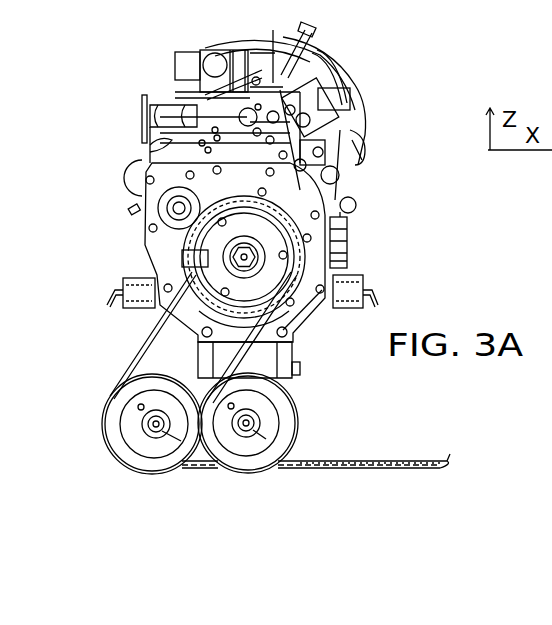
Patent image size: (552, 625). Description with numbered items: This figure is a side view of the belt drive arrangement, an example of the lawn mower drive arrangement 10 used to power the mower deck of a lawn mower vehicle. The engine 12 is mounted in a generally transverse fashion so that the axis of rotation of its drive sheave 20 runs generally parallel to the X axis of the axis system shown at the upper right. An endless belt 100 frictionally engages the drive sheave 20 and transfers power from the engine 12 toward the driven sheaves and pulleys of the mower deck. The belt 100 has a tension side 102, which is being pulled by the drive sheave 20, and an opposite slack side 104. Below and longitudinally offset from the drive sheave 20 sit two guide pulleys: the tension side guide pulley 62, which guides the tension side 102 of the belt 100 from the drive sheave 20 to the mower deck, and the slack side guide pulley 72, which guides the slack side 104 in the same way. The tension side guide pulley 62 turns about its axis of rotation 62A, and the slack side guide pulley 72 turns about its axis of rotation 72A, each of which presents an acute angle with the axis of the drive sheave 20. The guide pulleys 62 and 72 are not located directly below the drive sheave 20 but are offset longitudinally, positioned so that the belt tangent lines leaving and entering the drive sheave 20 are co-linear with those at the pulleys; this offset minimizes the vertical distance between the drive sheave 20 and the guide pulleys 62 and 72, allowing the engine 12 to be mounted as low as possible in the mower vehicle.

The lawn mower drive arrangement 10 is at (352, 338).
The engine 12 is at (371, 128).
The drive sheave 20 is at (280, 278).
The tension side guide pulley 62 is at (292, 398).
The axis of rotation of tension side guide pulley 62A is at (252, 426).
The slack side guide pulley 72 is at (128, 397).
The axis of rotation of slack side guide pulley 72A is at (150, 424).
The endless belt 100 is at (340, 436).
The tension side 102 is at (358, 460).
The slack side 104 is at (414, 434).